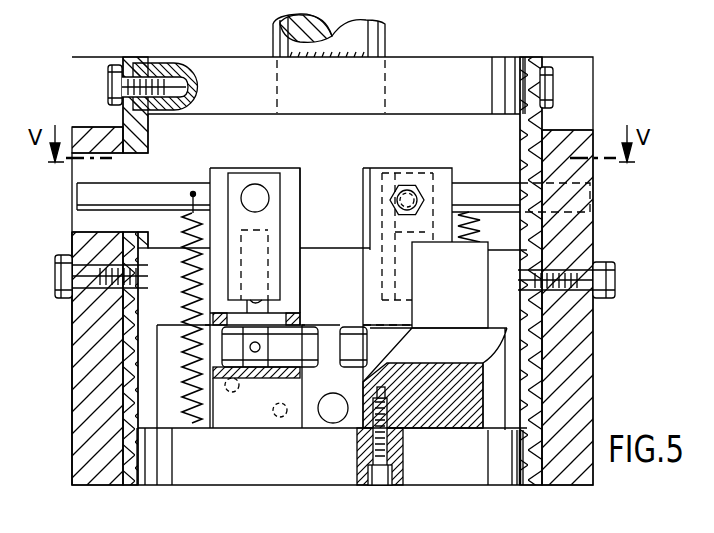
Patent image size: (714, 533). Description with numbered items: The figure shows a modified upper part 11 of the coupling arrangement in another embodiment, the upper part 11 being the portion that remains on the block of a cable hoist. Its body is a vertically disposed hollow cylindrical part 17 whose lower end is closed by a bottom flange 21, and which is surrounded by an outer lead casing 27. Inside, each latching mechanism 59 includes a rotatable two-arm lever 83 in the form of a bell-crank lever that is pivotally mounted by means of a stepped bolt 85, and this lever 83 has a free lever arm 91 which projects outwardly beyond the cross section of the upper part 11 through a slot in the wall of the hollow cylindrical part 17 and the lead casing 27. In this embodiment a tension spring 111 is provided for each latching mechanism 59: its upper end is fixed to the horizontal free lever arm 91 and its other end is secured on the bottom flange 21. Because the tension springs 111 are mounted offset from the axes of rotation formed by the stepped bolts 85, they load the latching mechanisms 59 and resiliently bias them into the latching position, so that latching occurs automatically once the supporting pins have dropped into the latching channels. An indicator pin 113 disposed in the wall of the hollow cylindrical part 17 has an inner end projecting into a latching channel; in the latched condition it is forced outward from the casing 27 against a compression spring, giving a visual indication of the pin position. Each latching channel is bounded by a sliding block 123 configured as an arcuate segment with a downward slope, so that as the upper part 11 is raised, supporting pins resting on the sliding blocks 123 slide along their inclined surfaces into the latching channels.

The upper part 11 is at (665, 201).
The hollow cylindrical part 17 is at (530, 103).
The bottom flange 21 is at (510, 467).
The lead casing 27 is at (105, 360).
The latching mechanism 59 is at (214, 162).
The two-arm lever 83 is at (278, 180).
The stepped bolt 85 is at (255, 195).
The free lever arm 91 is at (95, 195).
The tension spring 111 is at (185, 222).
The indicator pin 113 is at (333, 418).
The sliding block 123 is at (172, 413).